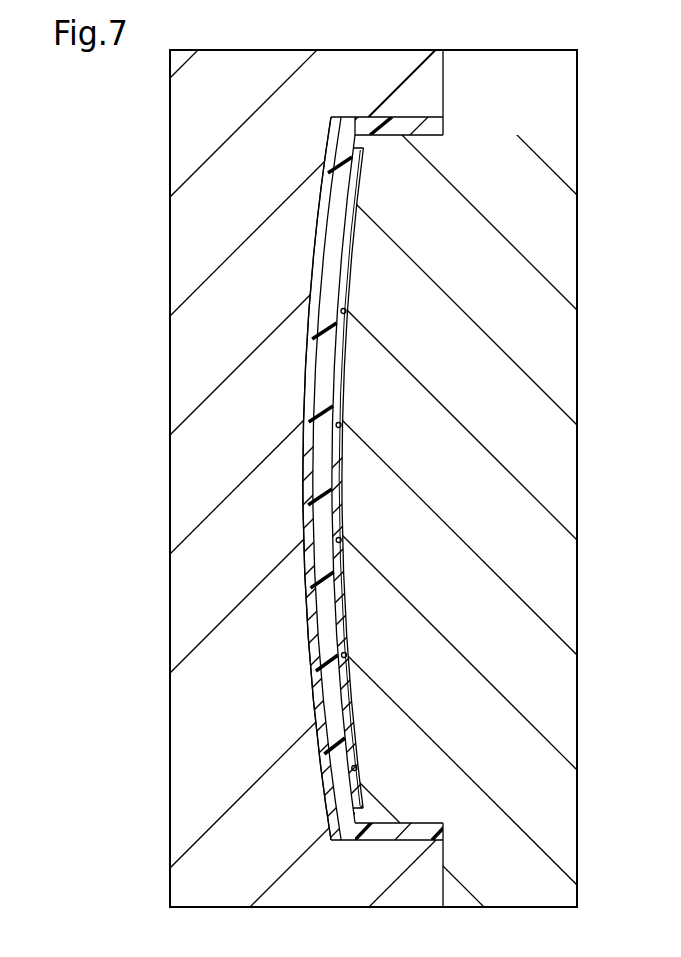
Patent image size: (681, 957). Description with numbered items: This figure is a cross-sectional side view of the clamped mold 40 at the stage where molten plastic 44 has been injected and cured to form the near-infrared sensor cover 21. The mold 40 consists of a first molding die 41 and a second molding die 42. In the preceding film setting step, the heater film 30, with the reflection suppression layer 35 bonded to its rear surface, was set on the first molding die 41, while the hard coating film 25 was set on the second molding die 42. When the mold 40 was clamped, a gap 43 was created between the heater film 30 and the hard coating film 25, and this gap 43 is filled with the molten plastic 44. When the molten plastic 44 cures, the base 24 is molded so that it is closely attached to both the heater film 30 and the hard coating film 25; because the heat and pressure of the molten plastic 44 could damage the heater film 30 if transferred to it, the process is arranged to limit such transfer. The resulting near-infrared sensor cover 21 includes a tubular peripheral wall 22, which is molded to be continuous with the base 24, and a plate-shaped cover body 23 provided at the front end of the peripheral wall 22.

The near-infrared sensor cover 21 is at (428, 798).
The peripheral wall 22 is at (406, 818).
The cover body 23 is at (360, 537).
The base 24 is at (352, 143).
The molten plastic 44 is at (345, 139).
The hard coating film 25 is at (312, 375).
The heater film 30 is at (366, 546).
The reflection suppression layer 35 is at (342, 393).
The mold 40 is at (340, 478).
The first molding die 41 is at (533, 125).
The second molding die 42 is at (430, 80).
The gap 43 is at (315, 260).